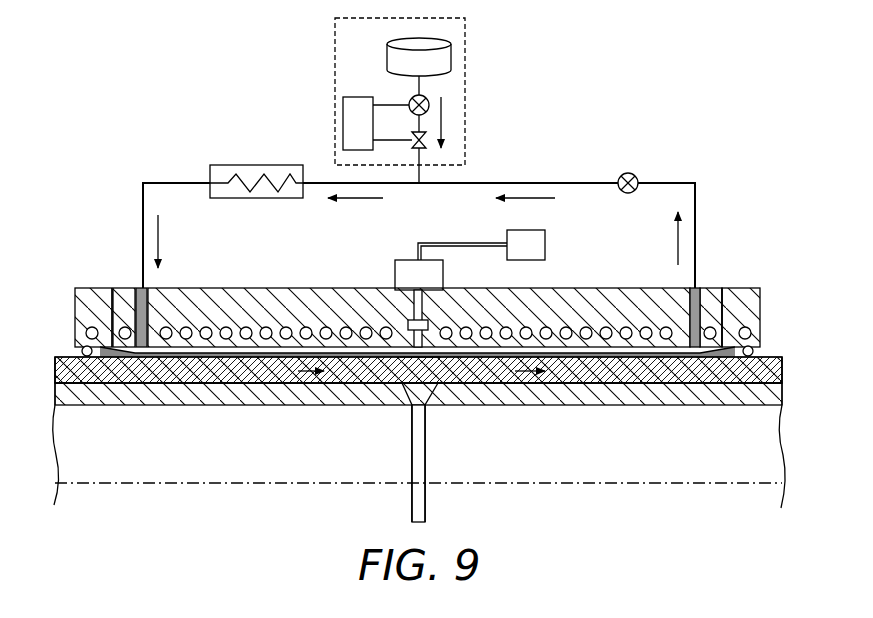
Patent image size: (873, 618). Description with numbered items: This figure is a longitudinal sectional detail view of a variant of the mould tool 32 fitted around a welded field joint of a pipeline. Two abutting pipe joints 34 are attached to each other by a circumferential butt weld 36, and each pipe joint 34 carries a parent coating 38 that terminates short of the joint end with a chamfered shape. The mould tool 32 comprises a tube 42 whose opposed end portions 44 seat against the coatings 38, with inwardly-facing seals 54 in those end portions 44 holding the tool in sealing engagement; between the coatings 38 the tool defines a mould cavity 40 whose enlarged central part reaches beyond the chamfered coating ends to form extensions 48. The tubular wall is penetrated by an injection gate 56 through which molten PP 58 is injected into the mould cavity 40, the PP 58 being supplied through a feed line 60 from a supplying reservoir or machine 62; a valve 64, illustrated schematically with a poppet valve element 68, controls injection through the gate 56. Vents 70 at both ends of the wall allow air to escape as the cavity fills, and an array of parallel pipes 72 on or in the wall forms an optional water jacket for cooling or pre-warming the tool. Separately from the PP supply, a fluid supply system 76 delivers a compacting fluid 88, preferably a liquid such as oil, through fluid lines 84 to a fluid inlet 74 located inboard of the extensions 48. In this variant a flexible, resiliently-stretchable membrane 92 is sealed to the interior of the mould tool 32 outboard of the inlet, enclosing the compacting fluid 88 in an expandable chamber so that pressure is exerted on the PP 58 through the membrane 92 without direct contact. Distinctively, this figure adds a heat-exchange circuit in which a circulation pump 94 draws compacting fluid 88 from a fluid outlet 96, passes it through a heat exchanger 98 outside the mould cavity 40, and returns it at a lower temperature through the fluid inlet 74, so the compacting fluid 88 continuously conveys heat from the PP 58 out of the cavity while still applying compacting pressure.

The mould tool 32 is at (70, 258).
The pipe joint 34 is at (126, 478).
The circumferential butt weld 36 is at (427, 450).
The coating 38 is at (55, 372).
The mould cavity 40 is at (640, 383).
The tube 42 is at (320, 284).
The end portion 44 is at (75, 300).
The extension 48 is at (125, 385).
The seal 54 is at (82, 350).
The gate 56 is at (430, 342).
The molten PP 58 is at (342, 383).
The feed line 60 is at (466, 243).
The supplying reservoir or machine 62 is at (545, 240).
The valve 64 is at (398, 260).
The poppet valve element 68 is at (410, 328).
The vent 70 is at (112, 288).
The pipe 72 is at (266, 327).
The fluid inlet 74 is at (150, 300).
The fluid supply system 76 is at (465, 90).
The fluid line 84 is at (518, 183).
The compacting fluid 88 is at (135, 290).
The membrane 92 is at (578, 385).
The circulation pump 94 is at (634, 173).
The fluid outlet 96 is at (690, 300).
The heat exchanger 98 is at (257, 165).